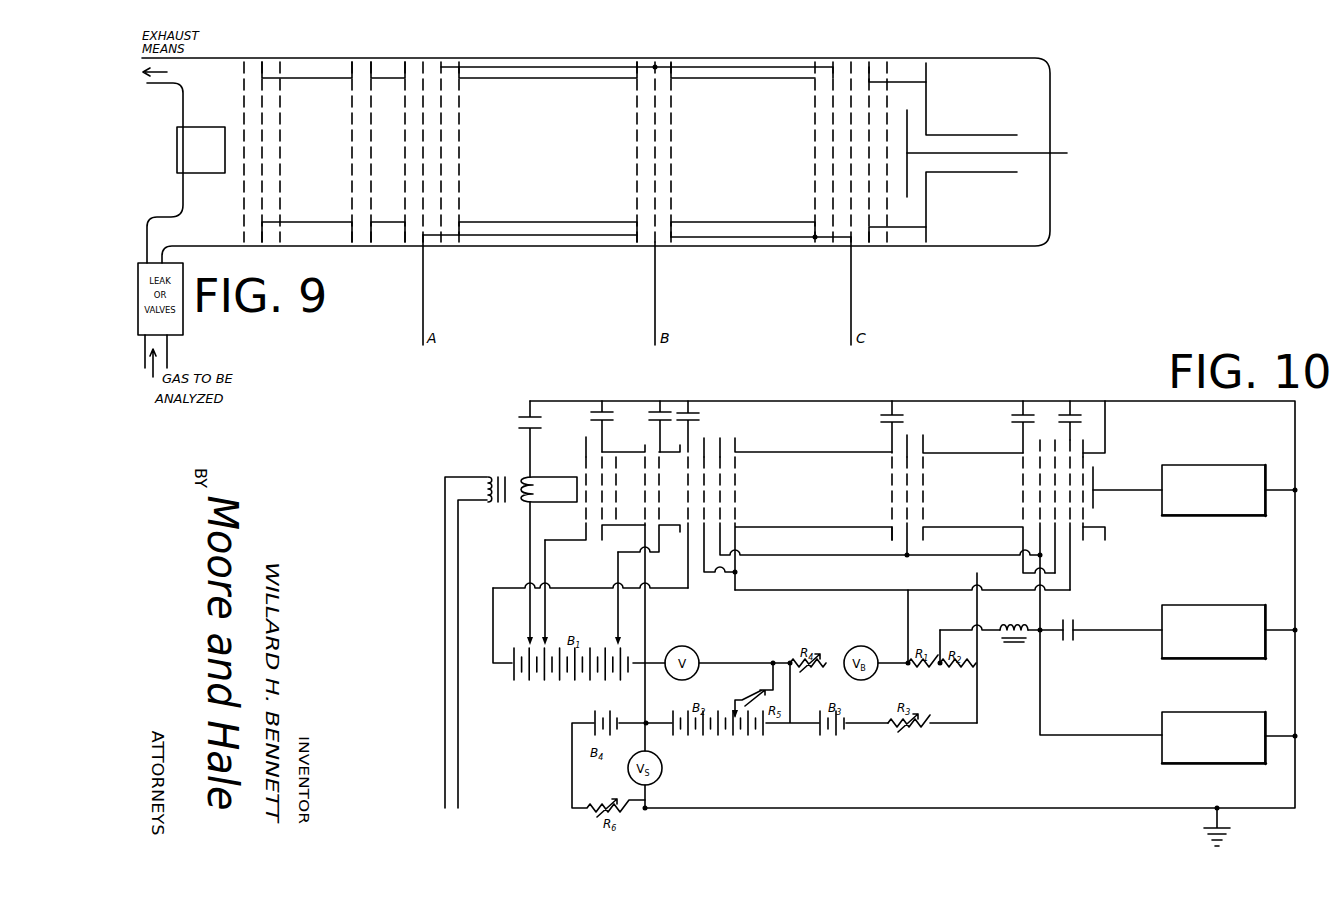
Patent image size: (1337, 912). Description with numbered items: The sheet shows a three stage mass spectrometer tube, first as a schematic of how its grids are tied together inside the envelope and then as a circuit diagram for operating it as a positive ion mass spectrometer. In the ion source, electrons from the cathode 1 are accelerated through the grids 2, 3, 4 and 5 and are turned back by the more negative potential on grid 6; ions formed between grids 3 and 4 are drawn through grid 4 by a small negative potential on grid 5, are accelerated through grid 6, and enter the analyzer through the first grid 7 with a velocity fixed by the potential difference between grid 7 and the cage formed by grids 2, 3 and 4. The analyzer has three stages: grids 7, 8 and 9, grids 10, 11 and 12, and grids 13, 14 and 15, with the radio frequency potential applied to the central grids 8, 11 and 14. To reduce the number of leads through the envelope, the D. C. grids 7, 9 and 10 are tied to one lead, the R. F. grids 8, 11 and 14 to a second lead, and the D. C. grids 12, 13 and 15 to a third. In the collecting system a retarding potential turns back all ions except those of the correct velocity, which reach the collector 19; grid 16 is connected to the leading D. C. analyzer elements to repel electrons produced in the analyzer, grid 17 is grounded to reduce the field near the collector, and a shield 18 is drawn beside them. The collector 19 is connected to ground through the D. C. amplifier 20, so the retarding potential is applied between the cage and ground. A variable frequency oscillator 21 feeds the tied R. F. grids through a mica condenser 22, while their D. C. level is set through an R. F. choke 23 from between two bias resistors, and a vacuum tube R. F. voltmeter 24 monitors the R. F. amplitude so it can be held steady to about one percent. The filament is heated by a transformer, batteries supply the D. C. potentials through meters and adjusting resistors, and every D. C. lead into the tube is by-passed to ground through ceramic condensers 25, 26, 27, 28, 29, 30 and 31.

In FIG. 9, the cathode 1 is at (212, 177).
In FIG. 10, the cathode 1 is at (553, 478).
In FIG. 9, the grid 2 is at (247, 59).
In FIG. 10, the grid 2 is at (588, 448).
In FIG. 9, the grid 3 is at (285, 59).
In FIG. 10, the grid 3 is at (609, 450).
In FIG. 9, the grid 4 is at (353, 59).
In FIG. 10, the grid 4 is at (642, 456).
In FIG. 9, the grid 5 is at (378, 61).
In FIG. 10, the grid 5 is at (661, 450).
In FIG. 9, the grid 6 is at (409, 59).
In FIG. 10, the grid 6 is at (686, 458).
In FIG. 9, the first grid of the analyzer 7 is at (433, 60).
In FIG. 10, the first grid of the analyzer 7 is at (708, 438).
In FIG. 9, the R. F. grid 8 is at (448, 60).
In FIG. 10, the R. F. grid 8 is at (724, 442).
In FIG. 9, the D. C. grid 9 is at (463, 63).
In FIG. 10, the D. C. grid 9 is at (738, 443).
In FIG. 9, the D. C. grid 10 is at (638, 59).
In FIG. 10, the D. C. grid 10 is at (891, 448).
In FIG. 9, the R. F. grid 11 is at (659, 59).
In FIG. 10, the R. F. grid 11 is at (913, 436).
In FIG. 9, the D. C. grid 12 is at (678, 63).
In FIG. 10, the D. C. grid 12 is at (927, 442).
In FIG. 9, the D. C. grid 13 is at (816, 59).
In FIG. 10, the D. C. grid 13 is at (1023, 453).
In FIG. 9, the R. F. grid 14 is at (853, 62).
In FIG. 10, the R. F. grid 14 is at (1040, 456).
In FIG. 9, the D. C. grid 15 is at (872, 62).
In FIG. 10, the D. C. grid 15 is at (1048, 440).
In FIG. 9, the grid 16 is at (893, 62).
In FIG. 10, the grid 16 is at (1075, 437).
In FIG. 9, the grid 17 is at (904, 63).
In FIG. 10, the grid 17 is at (1087, 443).
In FIG. 9, the shield electrode 18 is at (929, 107).
In FIG. 10, the shield electrode 18 is at (1103, 473).
In FIG. 9, the collector 19 is at (909, 137).
In FIG. 10, the collector 19 is at (1110, 475).
In FIG. 10, the D. C. amplifier 20 is at (1268, 472).
In FIG. 10, the variable frequency oscillator 21 is at (1270, 612).
In FIG. 10, the mica condenser 22 is at (1082, 617).
In FIG. 10, the R. F. choke 23 is at (1013, 641).
In FIG. 10, the vacuum tube R. F. voltmeter 24 is at (1267, 723).
In FIG. 10, the ceramic condenser 25 is at (541, 411).
In FIG. 10, the ceramic condenser 26 is at (609, 411).
In FIG. 10, the ceramic condenser 27 is at (665, 411).
In FIG. 10, the ceramic condenser 28 is at (693, 413).
In FIG. 10, the ceramic condenser 29 is at (896, 413).
In FIG. 10, the ceramic condenser 30 is at (1027, 413).
In FIG. 10, the ceramic condenser 31 is at (1074, 413).